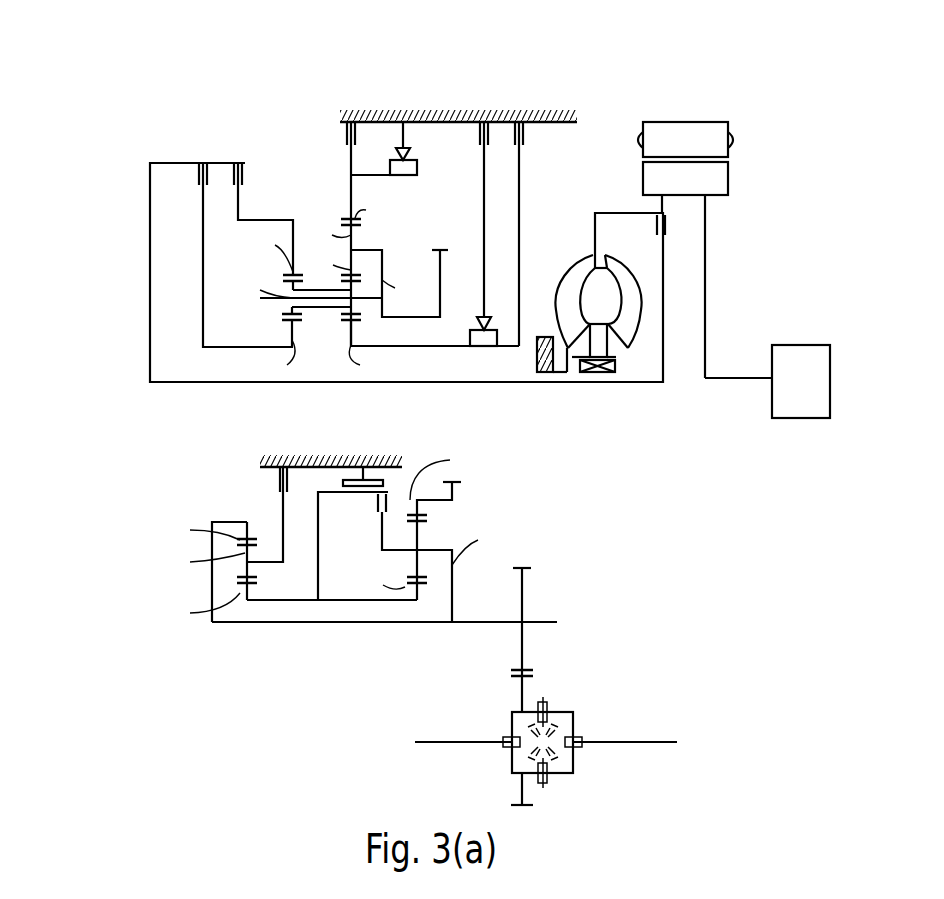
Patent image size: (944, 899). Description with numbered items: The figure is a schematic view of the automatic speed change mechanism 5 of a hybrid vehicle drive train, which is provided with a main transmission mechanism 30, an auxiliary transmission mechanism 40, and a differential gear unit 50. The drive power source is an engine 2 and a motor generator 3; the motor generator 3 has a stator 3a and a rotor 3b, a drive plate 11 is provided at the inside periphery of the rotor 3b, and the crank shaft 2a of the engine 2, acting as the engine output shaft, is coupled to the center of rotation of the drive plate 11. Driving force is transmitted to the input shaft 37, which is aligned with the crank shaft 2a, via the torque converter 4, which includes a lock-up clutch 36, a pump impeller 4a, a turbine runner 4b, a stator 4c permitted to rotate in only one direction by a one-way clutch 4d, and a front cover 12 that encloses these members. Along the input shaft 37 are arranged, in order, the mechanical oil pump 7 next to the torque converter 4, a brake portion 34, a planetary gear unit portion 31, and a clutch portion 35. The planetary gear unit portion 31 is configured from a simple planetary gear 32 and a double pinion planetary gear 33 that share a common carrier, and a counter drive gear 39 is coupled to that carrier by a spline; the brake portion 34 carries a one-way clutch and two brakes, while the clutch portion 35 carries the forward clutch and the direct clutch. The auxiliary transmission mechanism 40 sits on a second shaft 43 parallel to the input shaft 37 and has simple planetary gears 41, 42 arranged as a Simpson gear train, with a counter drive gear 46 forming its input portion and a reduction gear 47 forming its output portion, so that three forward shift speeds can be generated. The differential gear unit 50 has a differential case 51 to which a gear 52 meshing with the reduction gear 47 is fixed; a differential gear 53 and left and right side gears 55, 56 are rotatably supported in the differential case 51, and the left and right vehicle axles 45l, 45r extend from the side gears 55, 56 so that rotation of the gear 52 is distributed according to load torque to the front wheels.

The automatic speed change mechanism 5 is at (404, 35).
The brake portion 34 is at (528, 52).
The clutch portion 35 is at (175, 138).
The main transmission mechanism 30 is at (130, 272).
The planetary gear unit portion 31 is at (243, 63).
The simple planetary gear 32 is at (292, 200).
The double pinion planetary gear 33 is at (337, 200).
The counter drive gear 39 is at (440, 262).
The torque converter 4 is at (570, 224).
The pump impeller 4a is at (570, 268).
The turbine runner 4b is at (615, 258).
The stator 4c is at (600, 345).
The one-way clutch 4d is at (600, 372).
The mechanical oil pump 7 is at (537, 362).
The input shaft 37 is at (545, 372).
The front cover 12 is at (625, 212).
The lock-up clutch 36 is at (665, 235).
The motor generator 3 is at (715, 122).
The stator 3a is at (728, 137).
The rotor 3b is at (718, 172).
The drive plate 11 is at (705, 232).
The engine 2 is at (818, 345).
The crank shaft 2a is at (750, 378).
The auxiliary transmission mechanism 40 is at (115, 555).
The simple planetary gear 41 is at (462, 510).
The simple planetary gear 42 is at (215, 512).
The second shaft 43 is at (325, 622).
The counter drive gear 46 is at (462, 484).
The reduction gear 47 is at (522, 582).
The differential gear unit 50 is at (592, 698).
The differential case 51 is at (575, 765).
The gear 52 is at (512, 685).
The differential gear 53 is at (553, 757).
The left side gear 55 is at (525, 740).
The right side gear 56 is at (565, 738).
The left vehicle axle 45l is at (425, 745).
The right vehicle axle 45r is at (665, 742).